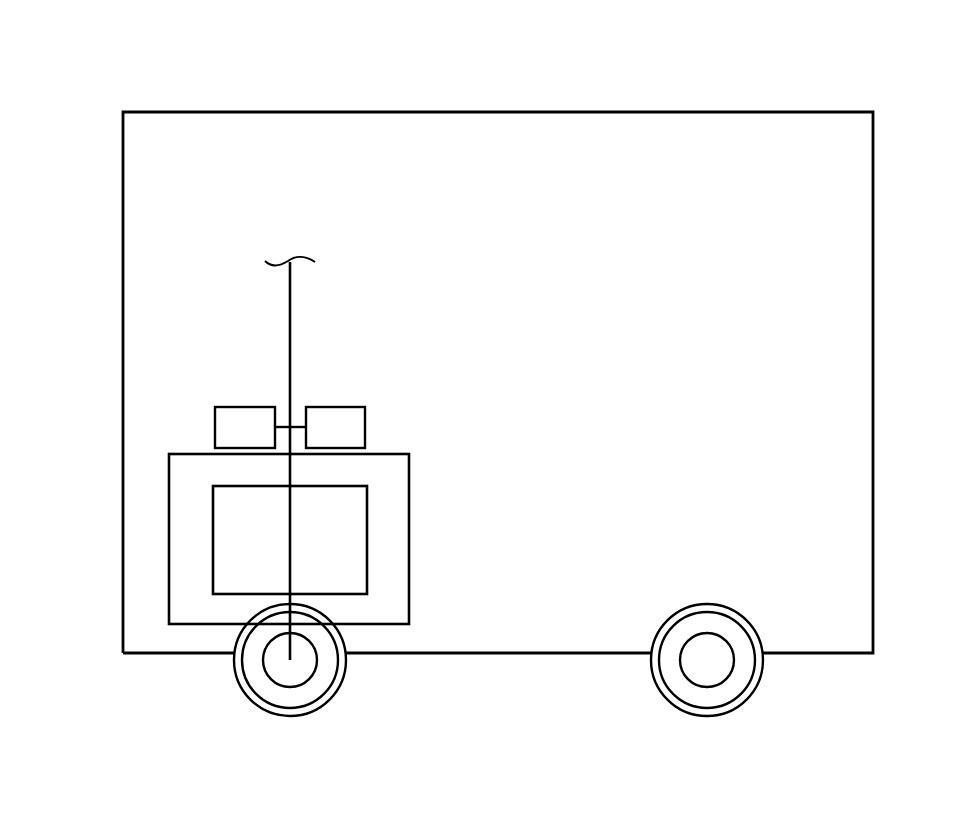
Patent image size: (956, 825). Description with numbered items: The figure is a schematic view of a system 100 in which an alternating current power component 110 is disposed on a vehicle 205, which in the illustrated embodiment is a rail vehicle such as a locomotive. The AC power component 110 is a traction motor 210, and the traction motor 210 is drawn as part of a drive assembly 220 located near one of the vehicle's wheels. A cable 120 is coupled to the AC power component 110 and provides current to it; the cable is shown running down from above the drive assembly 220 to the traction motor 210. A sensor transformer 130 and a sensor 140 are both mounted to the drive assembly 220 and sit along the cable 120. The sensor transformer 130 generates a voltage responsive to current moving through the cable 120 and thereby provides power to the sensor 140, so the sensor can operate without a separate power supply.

The system 100 is at (131, 57).
The vehicle 205 is at (812, 112).
The alternating current (AC) power component 110 is at (213, 562).
The cable 120 is at (289, 357).
The sensor transformer 130 is at (270, 440).
The sensor 140 is at (361, 440).
The drive assembly 220 is at (387, 454).
The traction motor 210 is at (313, 552).